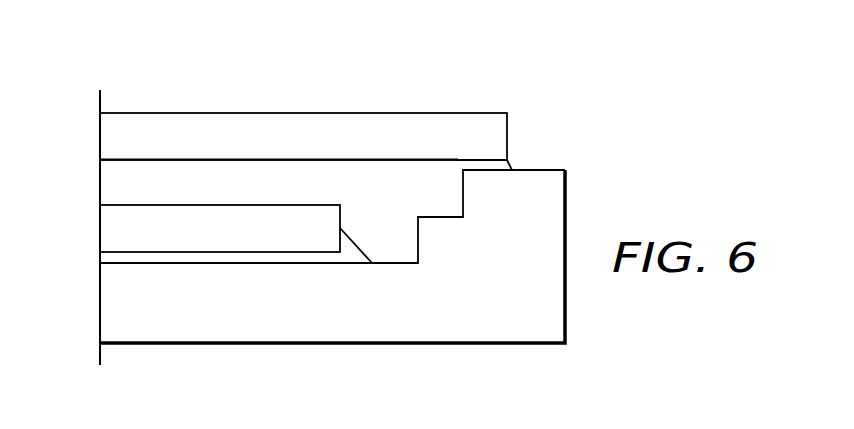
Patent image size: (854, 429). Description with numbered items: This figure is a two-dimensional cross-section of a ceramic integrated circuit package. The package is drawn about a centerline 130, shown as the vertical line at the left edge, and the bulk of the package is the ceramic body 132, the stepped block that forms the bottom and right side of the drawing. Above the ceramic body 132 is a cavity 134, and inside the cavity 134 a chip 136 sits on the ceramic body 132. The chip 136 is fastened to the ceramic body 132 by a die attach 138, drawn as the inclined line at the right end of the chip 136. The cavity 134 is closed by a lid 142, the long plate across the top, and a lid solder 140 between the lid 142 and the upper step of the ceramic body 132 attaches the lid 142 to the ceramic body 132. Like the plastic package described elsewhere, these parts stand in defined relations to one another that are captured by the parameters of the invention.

The centerline 130 is at (100, 357).
The ceramic body 132 is at (526, 316).
The cavity 134 is at (110, 183).
The chip 136 is at (203, 218).
The die attach 138 is at (360, 240).
The lid solder 140 is at (508, 168).
The lid 142 is at (452, 112).